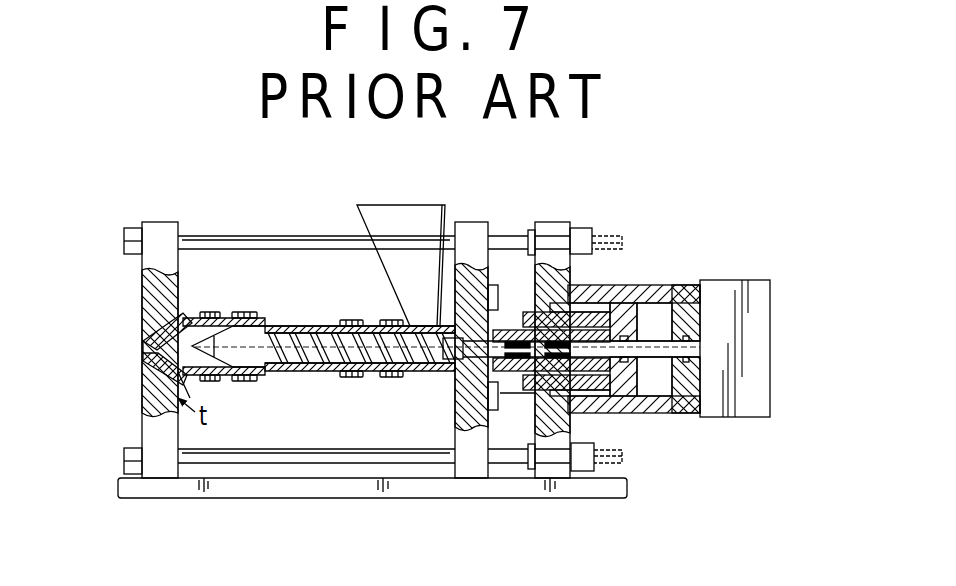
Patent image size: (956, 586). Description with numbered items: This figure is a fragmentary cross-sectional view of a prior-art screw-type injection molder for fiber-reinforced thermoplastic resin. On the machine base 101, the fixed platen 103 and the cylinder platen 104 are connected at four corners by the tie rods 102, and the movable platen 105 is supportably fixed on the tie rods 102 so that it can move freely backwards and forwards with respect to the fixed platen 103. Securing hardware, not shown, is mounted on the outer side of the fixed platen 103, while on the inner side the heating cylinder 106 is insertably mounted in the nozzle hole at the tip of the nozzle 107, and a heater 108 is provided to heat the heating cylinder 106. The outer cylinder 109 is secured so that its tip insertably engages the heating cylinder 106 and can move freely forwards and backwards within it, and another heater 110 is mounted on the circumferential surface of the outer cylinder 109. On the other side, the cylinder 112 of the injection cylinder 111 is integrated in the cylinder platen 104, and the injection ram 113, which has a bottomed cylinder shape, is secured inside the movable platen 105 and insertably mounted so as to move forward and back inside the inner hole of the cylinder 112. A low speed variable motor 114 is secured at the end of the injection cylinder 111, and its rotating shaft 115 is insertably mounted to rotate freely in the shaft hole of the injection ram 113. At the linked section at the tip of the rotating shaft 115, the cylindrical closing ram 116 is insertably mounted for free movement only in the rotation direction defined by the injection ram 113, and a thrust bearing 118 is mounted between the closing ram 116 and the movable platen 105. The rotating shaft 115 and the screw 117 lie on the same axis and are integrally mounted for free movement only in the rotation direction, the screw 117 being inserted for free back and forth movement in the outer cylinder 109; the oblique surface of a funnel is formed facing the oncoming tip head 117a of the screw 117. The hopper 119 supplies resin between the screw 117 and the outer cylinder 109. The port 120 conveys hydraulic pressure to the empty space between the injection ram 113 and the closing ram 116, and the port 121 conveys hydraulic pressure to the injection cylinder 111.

The machine base 101 is at (360, 498).
The tie rods 102 is at (258, 236).
The fixed platen 103 is at (158, 222).
The cylinder platen 104 is at (552, 222).
The movable platen 105 is at (464, 222).
The heating cylinder 106 is at (257, 318).
The nozzle 107 is at (143, 343).
The heater 108 is at (208, 313).
The outer cylinder 109 is at (328, 322).
The heater 110 is at (357, 371).
The injection cylinder 111 is at (684, 211).
The cylinder 112 is at (634, 285).
The injection ram 113 is at (586, 298).
The low speed variable motor 114 is at (757, 280).
The rotating shaft 115 is at (663, 349).
The closing ram 116 is at (602, 366).
The screw 117 is at (310, 350).
The tip head 117a is at (143, 368).
The thrust bearing 118 is at (520, 393).
The hopper 119 is at (390, 205).
The port 120 is at (523, 327).
The port 121 is at (675, 285).